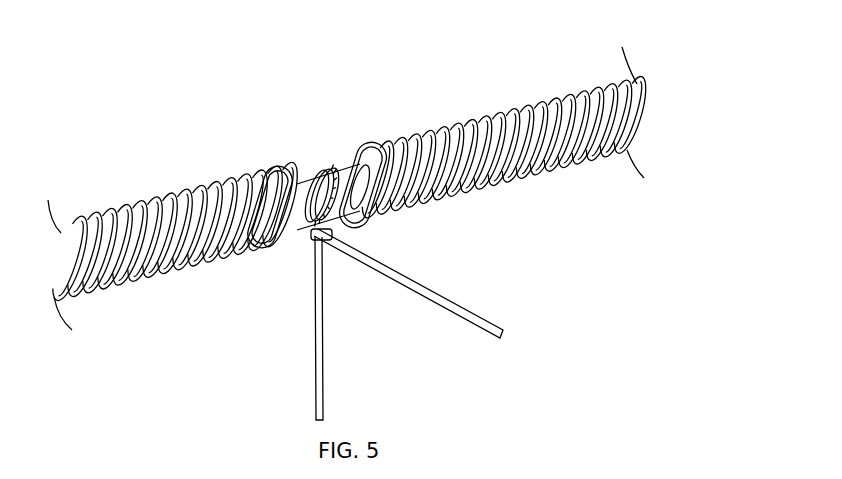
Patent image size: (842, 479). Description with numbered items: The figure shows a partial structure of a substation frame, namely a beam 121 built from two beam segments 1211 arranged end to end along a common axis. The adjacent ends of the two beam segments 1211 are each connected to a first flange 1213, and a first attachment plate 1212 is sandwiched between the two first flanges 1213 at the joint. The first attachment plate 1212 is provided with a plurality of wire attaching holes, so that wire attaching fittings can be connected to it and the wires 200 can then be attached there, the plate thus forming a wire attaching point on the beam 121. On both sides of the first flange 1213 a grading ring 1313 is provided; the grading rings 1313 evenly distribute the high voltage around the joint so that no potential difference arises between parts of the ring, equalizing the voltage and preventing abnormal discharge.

The beam 121 is at (347, 167).
The beam segment 1211 is at (153, 190).
The first attachment plate 1212 is at (320, 178).
The first flange 1213 is at (327, 166).
The grading ring 1313 is at (305, 242).
The wire 200 is at (440, 295).